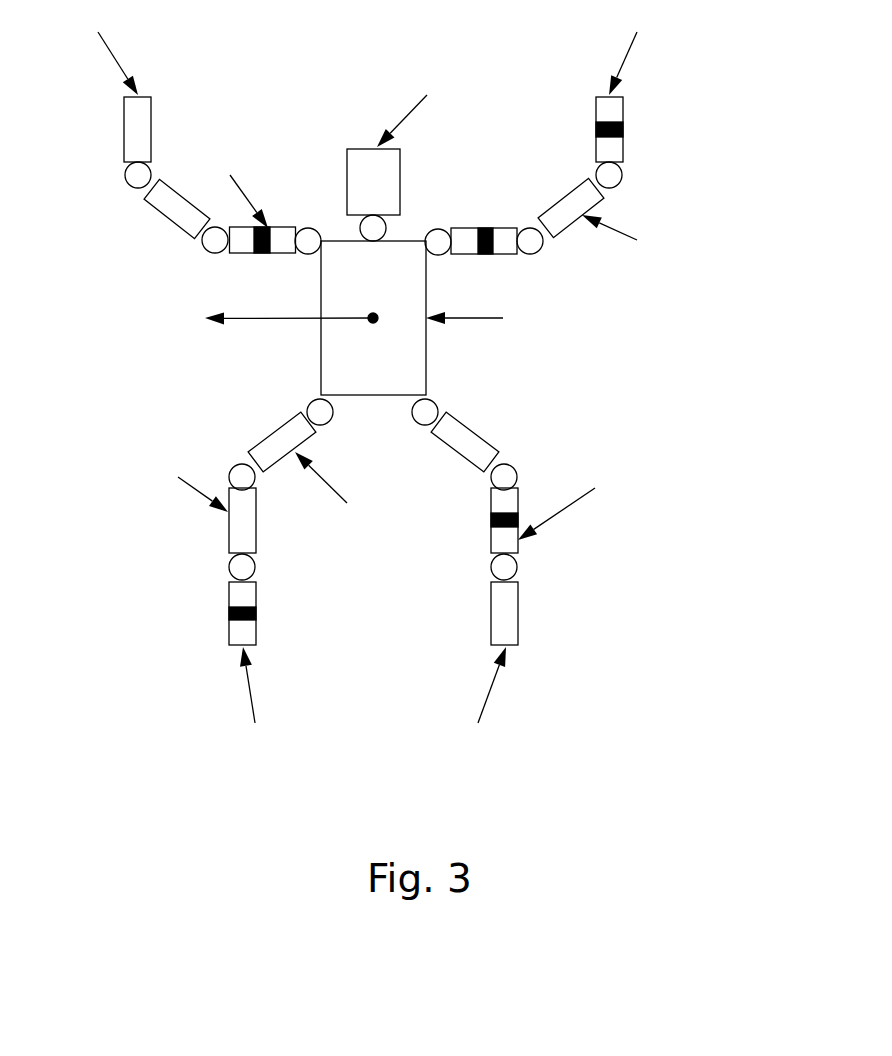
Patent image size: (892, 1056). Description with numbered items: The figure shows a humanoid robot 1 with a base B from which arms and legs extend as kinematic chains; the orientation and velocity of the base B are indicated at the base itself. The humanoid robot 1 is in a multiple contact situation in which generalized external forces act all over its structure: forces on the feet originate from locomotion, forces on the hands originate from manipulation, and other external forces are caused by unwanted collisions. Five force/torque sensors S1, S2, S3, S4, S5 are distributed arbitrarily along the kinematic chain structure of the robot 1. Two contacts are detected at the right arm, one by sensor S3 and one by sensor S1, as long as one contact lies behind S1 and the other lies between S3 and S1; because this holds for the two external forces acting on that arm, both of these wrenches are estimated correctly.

The humanoid robot 1 is at (150, 352).
The base B is at (373, 318).
The force/torque sensor S1 is at (629, 129).
The force/torque sensor S2 is at (263, 257).
The force/torque sensor S3 is at (484, 258).
The force/torque sensor S4 is at (485, 520).
The force/torque sensor S5 is at (263, 613).